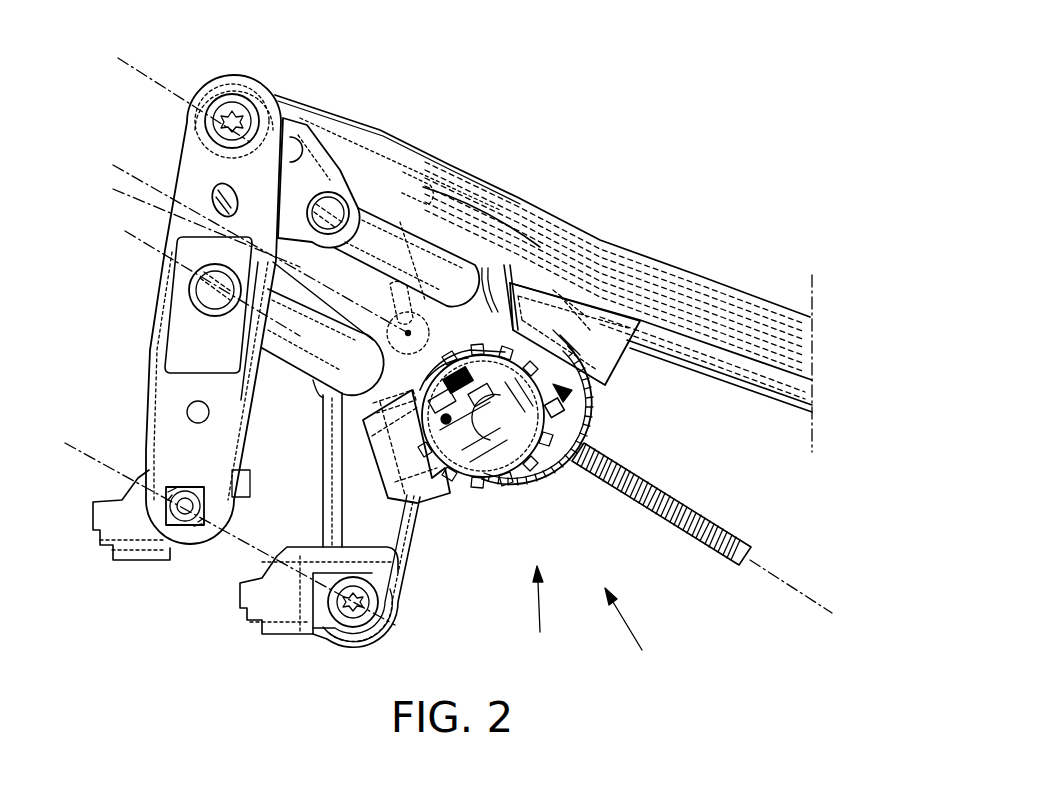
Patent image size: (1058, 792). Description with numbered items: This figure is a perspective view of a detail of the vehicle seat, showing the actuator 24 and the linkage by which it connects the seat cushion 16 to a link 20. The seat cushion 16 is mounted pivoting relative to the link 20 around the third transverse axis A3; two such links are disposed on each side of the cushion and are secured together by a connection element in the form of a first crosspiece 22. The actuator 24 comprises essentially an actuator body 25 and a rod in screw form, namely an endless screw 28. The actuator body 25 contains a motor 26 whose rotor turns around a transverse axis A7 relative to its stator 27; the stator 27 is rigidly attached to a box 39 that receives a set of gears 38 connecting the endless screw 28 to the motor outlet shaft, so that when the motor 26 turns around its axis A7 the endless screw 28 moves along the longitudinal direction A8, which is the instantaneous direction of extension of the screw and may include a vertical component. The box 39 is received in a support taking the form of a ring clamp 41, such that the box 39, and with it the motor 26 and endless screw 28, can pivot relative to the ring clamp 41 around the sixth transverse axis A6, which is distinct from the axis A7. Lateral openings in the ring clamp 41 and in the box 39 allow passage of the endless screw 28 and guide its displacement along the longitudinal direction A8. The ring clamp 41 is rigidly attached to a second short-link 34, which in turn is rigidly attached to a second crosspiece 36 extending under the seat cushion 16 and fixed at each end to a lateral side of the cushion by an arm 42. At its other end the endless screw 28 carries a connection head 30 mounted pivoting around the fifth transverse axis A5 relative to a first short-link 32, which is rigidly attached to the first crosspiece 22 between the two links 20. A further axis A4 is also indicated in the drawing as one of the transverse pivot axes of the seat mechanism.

The seat cushion 16 is at (667, 267).
The link 20 is at (158, 413).
The first crosspiece 22 is at (303, 343).
The actuator 24 is at (638, 631).
The actuator body 25 is at (542, 616).
The motor 26 is at (508, 460).
The stator 27 is at (522, 455).
The endless screw 28 is at (637, 497).
The connection head 30 is at (517, 283).
The first short-link 32 is at (330, 393).
The second short-link 34 is at (407, 460).
The second crosspiece 36 is at (417, 260).
The set of gears 38 is at (570, 394).
The box 39 is at (563, 414).
The ring clamp 41 is at (562, 453).
The arm 42 is at (312, 172).
The third transverse axis A3 is at (135, 63).
The pivot axis A4 is at (73, 450).
The fifth transverse axis A5 is at (132, 172).
The sixth transverse axis A6 is at (130, 197).
The transverse axis of rotation of the motor A7 is at (140, 241).
The longitudinal direction A8 is at (807, 593).